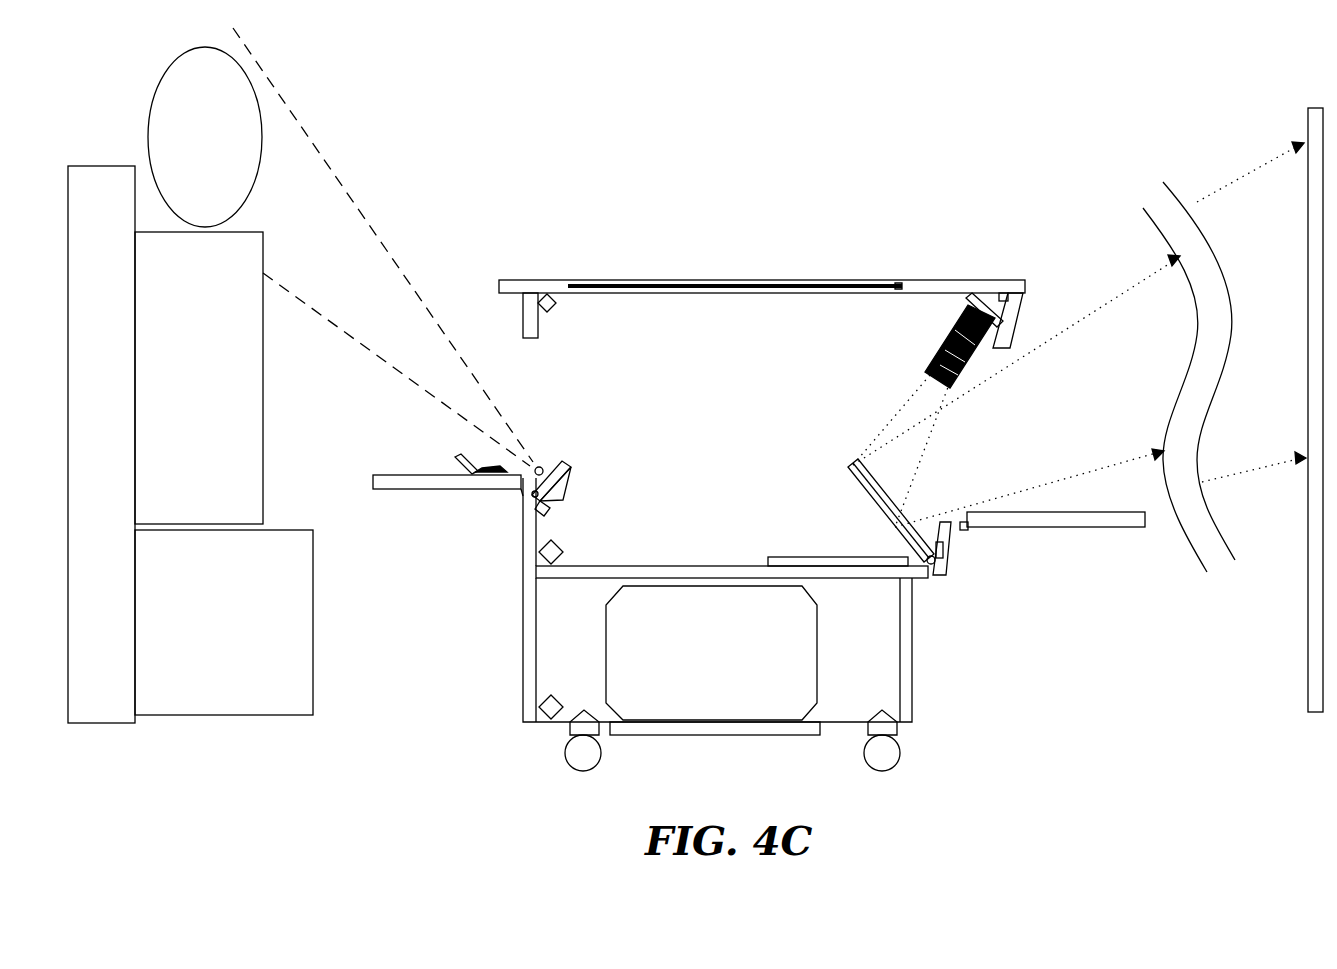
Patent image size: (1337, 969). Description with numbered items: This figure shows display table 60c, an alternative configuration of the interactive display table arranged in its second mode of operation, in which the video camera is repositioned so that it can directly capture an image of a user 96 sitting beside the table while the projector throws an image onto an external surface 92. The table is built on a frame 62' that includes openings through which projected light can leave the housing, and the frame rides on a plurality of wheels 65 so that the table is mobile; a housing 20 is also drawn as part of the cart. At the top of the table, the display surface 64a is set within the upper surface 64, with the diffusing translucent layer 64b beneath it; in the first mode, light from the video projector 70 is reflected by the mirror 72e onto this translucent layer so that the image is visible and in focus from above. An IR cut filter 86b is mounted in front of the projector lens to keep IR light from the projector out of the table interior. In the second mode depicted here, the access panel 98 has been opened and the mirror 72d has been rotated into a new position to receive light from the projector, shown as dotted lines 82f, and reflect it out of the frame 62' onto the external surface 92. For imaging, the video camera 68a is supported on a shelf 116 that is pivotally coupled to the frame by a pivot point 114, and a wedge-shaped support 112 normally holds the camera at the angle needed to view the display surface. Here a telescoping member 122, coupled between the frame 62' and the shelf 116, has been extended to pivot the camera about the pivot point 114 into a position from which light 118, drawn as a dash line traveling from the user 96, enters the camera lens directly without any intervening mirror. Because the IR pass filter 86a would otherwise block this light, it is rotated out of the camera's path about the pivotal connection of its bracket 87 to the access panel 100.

The cart housing 20 is at (818, 660).
The display table 60c is at (452, 716).
The frame 62' is at (699, 606).
The upper surface 64 is at (540, 280).
The display surface 64a is at (628, 280).
The translucent layer 64b is at (868, 284).
The wheels 65 is at (565, 755).
The video camera 68a is at (523, 500).
The video projector 70 is at (975, 310).
The mirror 72d is at (880, 508).
The mirror 72e is at (813, 561).
The dotted lines 82f is at (1090, 315).
The IR pass filter 86a is at (455, 462).
The IR cut filter 86b is at (935, 372).
The bracket 87 is at (487, 468).
The external surface 92 is at (1307, 197).
The user 96 is at (264, 357).
The access panel 98 is at (1030, 528).
The access panel 100 is at (448, 490).
The wedge-shaped support 112 is at (572, 480).
The pivot point 114 is at (548, 514).
The shelf 116 is at (545, 467).
The light 118 is at (393, 243).
The telescoping member 122 is at (562, 500).